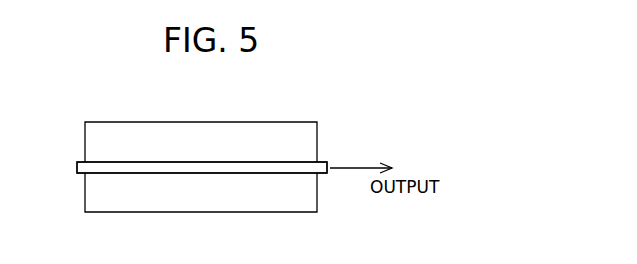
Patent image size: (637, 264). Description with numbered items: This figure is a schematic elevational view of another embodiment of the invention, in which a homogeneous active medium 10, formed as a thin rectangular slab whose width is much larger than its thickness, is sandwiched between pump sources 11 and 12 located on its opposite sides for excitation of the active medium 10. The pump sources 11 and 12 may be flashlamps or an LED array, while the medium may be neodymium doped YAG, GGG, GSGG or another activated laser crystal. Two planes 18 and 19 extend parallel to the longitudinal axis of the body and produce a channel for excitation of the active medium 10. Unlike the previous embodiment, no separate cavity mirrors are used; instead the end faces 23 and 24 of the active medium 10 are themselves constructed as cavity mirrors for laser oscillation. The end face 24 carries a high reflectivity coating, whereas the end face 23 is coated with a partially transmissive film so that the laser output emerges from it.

The active medium 10 is at (140, 170).
The pump source 11 is at (200, 137).
The pump source 12 is at (193, 205).
The plane 18 is at (253, 162).
The plane 19 is at (255, 174).
The end face 23 is at (328, 163).
The end face 24 is at (76, 164).